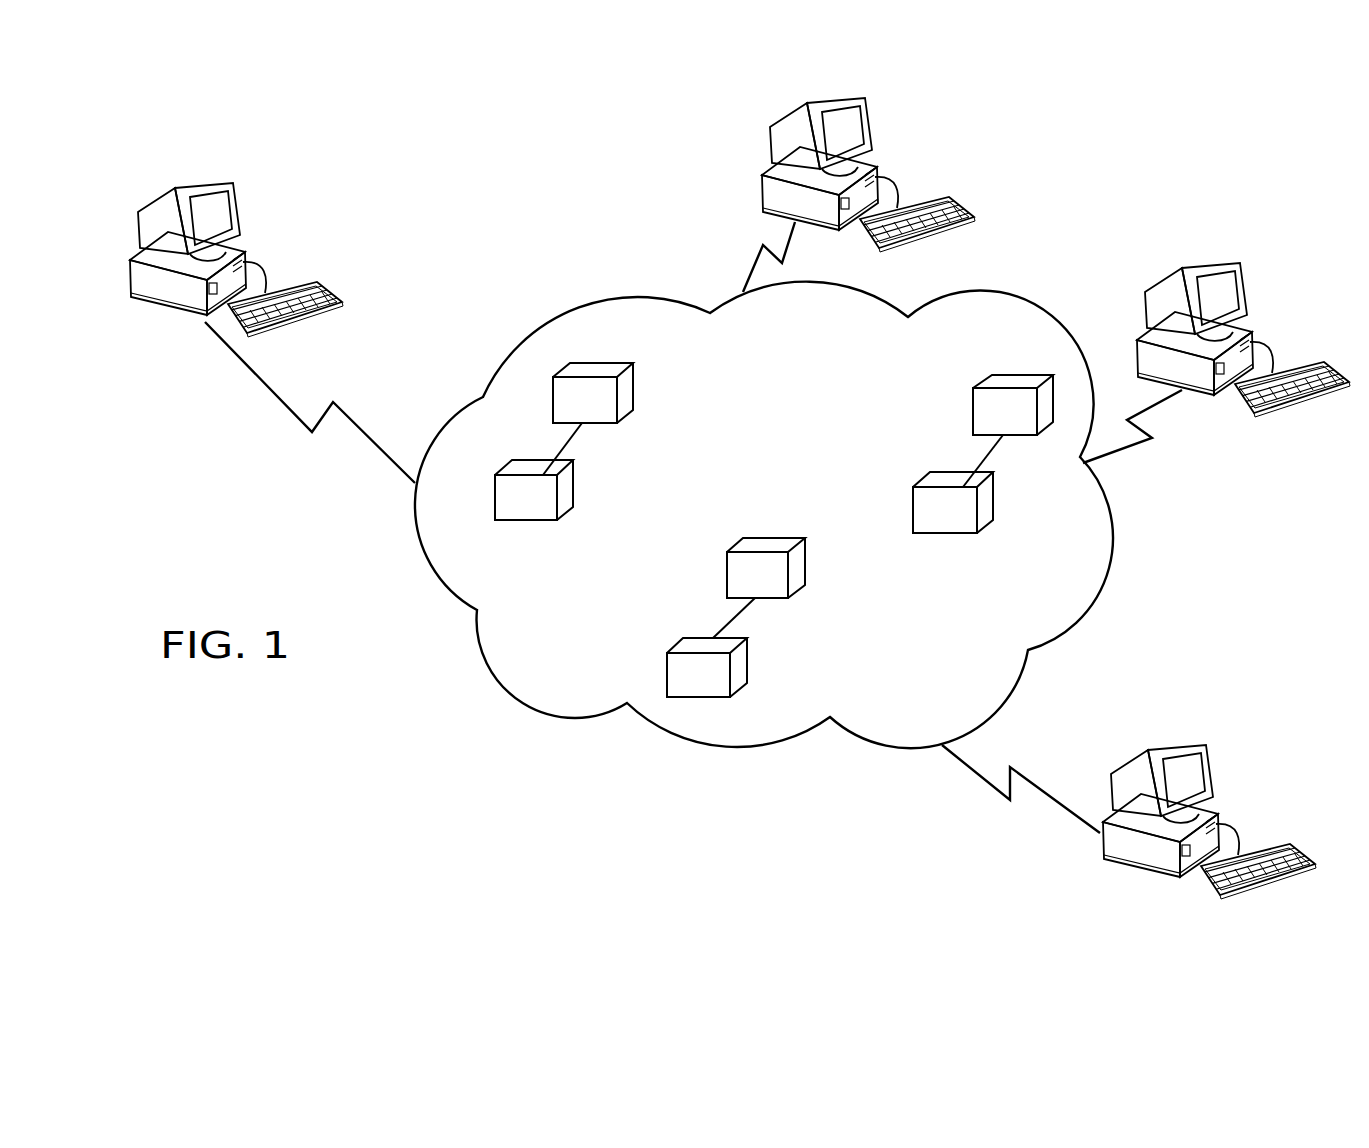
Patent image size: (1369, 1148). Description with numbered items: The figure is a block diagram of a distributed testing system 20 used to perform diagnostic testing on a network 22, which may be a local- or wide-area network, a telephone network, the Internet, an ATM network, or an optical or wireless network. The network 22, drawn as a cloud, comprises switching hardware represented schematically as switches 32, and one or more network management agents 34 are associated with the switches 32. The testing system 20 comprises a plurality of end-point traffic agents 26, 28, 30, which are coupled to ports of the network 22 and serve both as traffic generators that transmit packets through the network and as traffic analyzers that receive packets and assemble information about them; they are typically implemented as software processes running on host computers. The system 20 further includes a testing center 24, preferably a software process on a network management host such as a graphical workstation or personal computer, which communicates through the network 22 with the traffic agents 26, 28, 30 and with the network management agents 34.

The distributed testing system 20 is at (112, 160).
The network 22 is at (582, 302).
The testing center 24 is at (235, 222).
The end-point traffic agent 26 is at (866, 123).
The end-point traffic agent 28 is at (1238, 283).
The end-point traffic agent 30 is at (1212, 782).
The switch 32 is at (510, 520).
The network management agent 34 is at (592, 363).